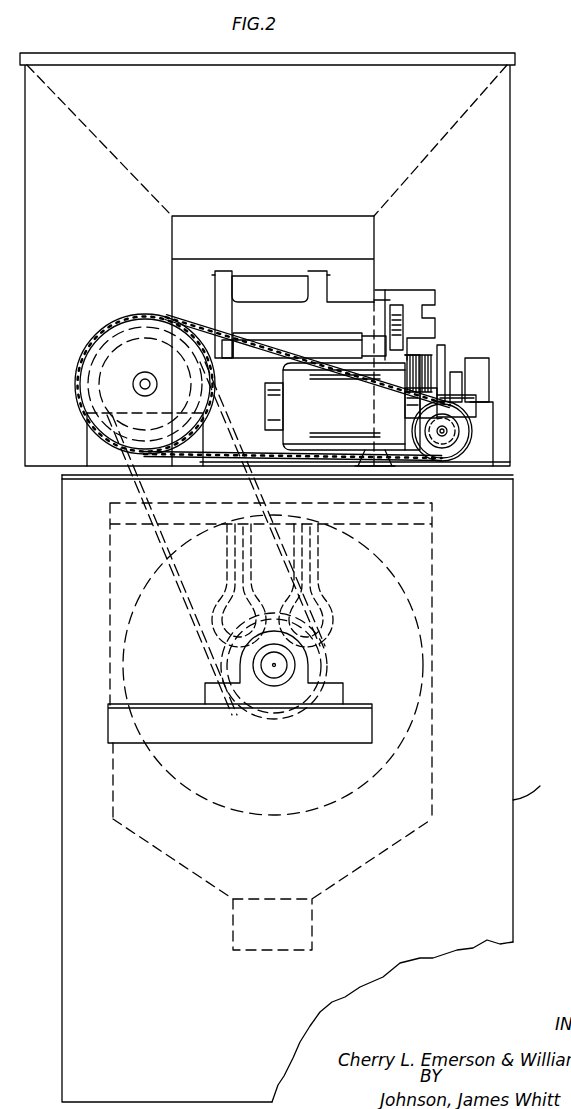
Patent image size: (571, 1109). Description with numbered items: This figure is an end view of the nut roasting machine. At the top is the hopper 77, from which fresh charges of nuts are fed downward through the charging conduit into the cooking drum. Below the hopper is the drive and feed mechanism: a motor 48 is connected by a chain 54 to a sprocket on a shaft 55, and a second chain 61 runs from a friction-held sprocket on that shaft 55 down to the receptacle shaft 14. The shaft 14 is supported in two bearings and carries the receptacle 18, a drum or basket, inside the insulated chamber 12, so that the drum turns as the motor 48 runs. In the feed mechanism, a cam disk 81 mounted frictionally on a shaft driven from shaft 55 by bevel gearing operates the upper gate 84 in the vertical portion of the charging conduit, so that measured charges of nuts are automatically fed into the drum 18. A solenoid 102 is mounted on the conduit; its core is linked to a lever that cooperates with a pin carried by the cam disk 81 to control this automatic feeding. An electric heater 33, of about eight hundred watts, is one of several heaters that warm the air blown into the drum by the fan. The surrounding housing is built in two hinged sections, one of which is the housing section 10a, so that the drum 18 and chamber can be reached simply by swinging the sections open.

The housing section 10a is at (542, 787).
The chamber 12 is at (392, 843).
The shaft 14 is at (278, 666).
The receptacle 18 is at (312, 802).
The electric heater 33 is at (322, 597).
The motor 48 is at (342, 402).
The chain 54 is at (147, 318).
The shaft 55 is at (140, 383).
The chain 61 is at (128, 482).
The hopper 77 is at (437, 143).
The cam disk 81 is at (398, 308).
The upper gate 84 is at (296, 272).
The solenoid 102 is at (437, 303).